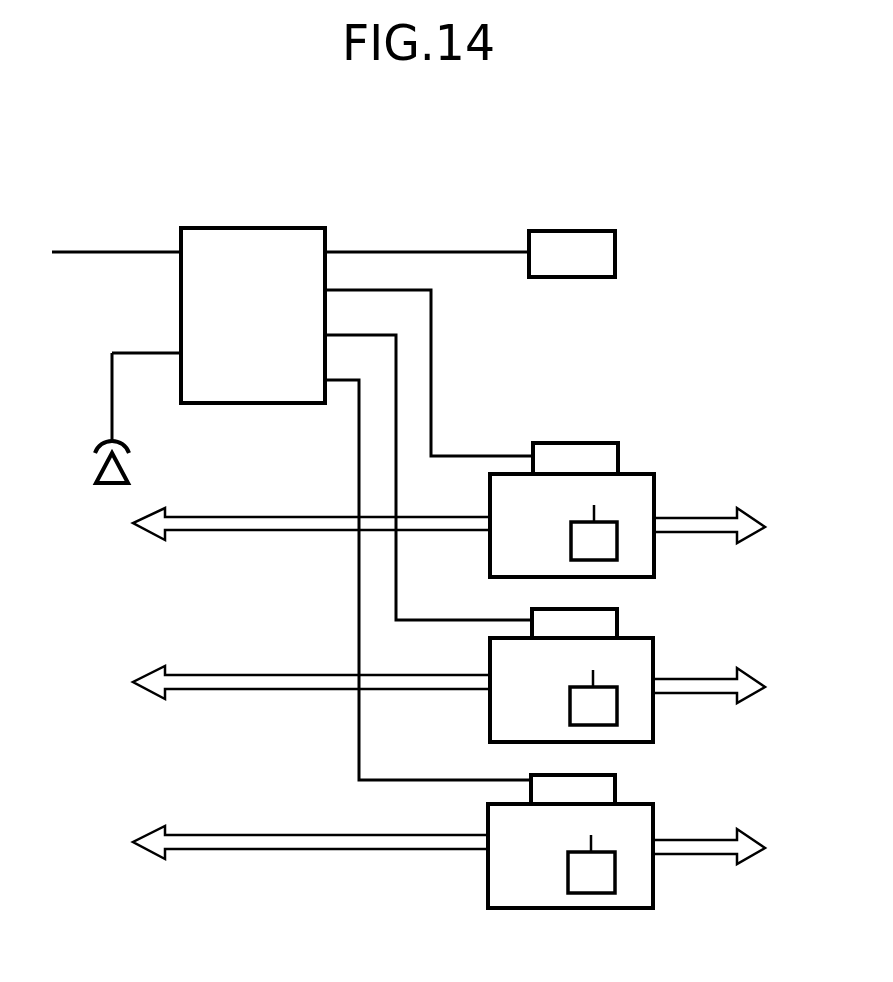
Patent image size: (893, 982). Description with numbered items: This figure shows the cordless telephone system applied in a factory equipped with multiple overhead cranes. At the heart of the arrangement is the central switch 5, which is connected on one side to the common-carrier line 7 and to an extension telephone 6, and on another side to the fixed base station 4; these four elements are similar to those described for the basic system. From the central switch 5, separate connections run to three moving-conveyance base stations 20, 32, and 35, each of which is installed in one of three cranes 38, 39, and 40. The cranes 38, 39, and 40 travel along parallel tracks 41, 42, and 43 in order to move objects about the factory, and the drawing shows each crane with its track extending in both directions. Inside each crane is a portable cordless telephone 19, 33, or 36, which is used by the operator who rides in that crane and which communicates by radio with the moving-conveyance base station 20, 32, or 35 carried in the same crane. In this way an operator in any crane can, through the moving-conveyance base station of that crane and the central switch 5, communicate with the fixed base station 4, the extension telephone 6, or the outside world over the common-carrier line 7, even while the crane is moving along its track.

The fixed base station 4 is at (620, 251).
The central switch 5 is at (210, 228).
The extension telephone 6 is at (133, 450).
The common-carrier line 7 is at (103, 248).
The portable cordless telephone 19 is at (570, 547).
The moving-conveyance base station 20 is at (605, 444).
The moving-conveyance base station 32 is at (618, 620).
The portable cordless telephone 33 is at (569, 712).
The moving-conveyance base station 35 is at (616, 784).
The portable cordless telephone 36 is at (568, 880).
The crane 38 is at (655, 487).
The crane 39 is at (654, 655).
The crane 40 is at (654, 820).
The track 41 is at (193, 531).
The track 42 is at (193, 691).
The track 43 is at (195, 851).